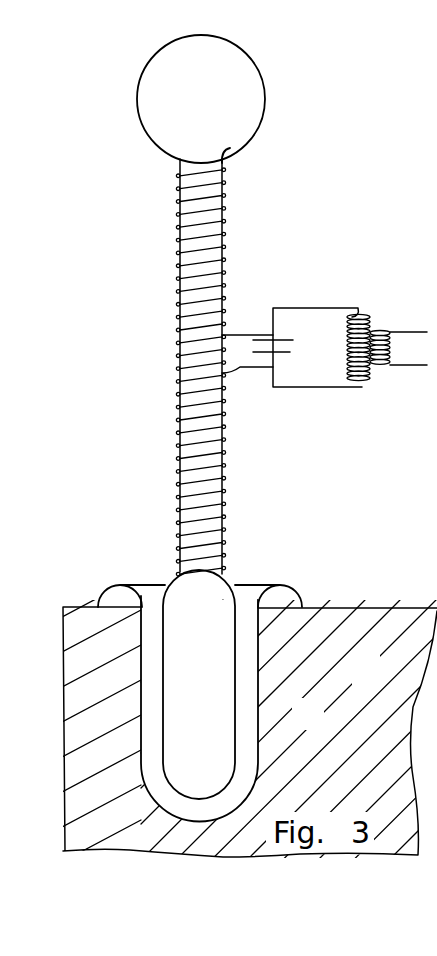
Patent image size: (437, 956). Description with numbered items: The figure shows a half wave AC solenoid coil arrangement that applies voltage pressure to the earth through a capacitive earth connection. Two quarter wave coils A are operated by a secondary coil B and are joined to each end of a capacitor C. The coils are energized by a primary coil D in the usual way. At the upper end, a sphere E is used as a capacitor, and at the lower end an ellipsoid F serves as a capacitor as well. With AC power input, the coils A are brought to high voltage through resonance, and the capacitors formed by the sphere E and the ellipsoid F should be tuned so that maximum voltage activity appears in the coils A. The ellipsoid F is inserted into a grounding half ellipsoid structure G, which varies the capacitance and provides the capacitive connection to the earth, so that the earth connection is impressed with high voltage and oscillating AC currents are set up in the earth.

The quarter wave coils A is at (224, 231).
The secondary coil B is at (370, 313).
The capacitor C is at (295, 347).
The primary coil D is at (383, 367).
The sphere E is at (201, 99).
The ellipsoid F is at (199, 684).
The grounding half ellipsoid structure G is at (258, 727).